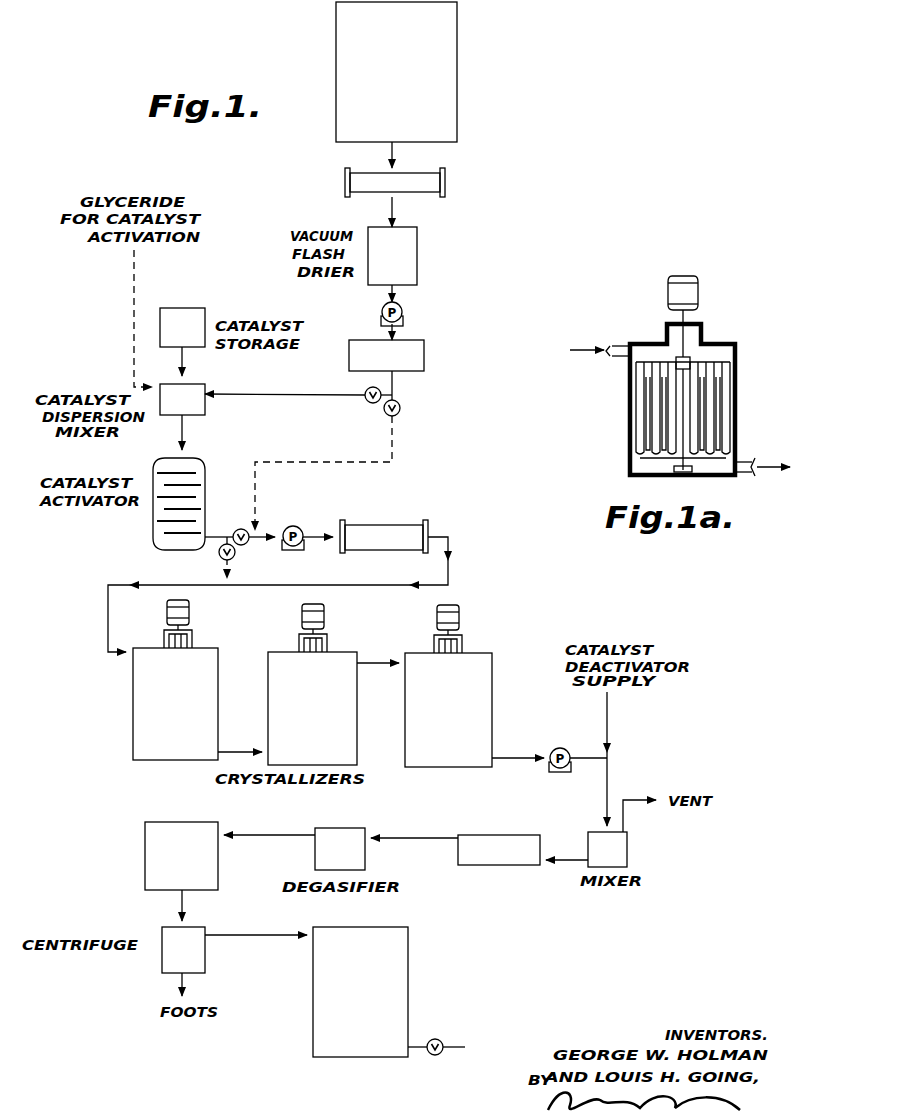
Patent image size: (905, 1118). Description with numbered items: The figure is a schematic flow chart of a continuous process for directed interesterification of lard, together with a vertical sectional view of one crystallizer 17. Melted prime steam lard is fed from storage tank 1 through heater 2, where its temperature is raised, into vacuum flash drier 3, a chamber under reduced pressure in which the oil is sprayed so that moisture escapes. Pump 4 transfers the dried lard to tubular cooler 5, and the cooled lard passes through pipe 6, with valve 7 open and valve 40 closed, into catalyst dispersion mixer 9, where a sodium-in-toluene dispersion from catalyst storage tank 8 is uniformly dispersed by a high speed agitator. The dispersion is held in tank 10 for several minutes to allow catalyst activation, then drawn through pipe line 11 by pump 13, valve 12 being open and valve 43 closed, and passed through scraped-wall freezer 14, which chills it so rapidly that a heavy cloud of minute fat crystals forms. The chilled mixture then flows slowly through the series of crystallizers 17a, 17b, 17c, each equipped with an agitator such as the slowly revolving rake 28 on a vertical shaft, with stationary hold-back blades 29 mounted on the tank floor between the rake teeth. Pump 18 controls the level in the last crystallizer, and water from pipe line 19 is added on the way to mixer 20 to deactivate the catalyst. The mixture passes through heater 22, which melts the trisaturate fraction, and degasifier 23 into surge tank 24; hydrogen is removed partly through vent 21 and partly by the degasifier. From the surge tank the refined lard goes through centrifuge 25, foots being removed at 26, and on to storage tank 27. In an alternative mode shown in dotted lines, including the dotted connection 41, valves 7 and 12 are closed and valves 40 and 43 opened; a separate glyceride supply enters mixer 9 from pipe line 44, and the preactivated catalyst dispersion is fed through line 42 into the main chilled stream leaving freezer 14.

In FIG. 1, the storage tank 1 is at (457, 94).
In FIG. 1, the heater 2 is at (445, 185).
In FIG. 1, the vacuum flash drier 3 is at (417, 258).
In FIG. 1, the pump 4 is at (402, 309).
In FIG. 1, the tubular cooler 5 is at (424, 348).
In FIG. 1, the pipe 6 is at (262, 397).
In FIG. 1, the valve 7 is at (365, 397).
In FIG. 1, the catalyst storage tank 8 is at (193, 308).
In FIG. 1, the catalyst dispersion mixer 9 is at (205, 407).
In FIG. 1, the tank 10 is at (205, 465).
In FIG. 1, the pipe line 11 is at (228, 535).
In FIG. 1, the valve 12 is at (249, 541).
In FIG. 1, the pump 13 is at (297, 526).
In FIG. 1, the scraped-wall freezer 14 is at (388, 520).
In FIG. 1A, the crystallizer 17 is at (628, 400).
In FIG. 1, the crystallizer 17a is at (175, 680).
In FIG. 1, the crystallizer 17b is at (312, 684).
In FIG. 1, the crystallizer 17c is at (448, 686).
In FIG. 1, the pump 18 is at (574, 730).
In FIG. 1, the pipe line 19 is at (608, 730).
In FIG. 1, the mixer 20 is at (627, 846).
In FIG. 1, the vent 21 is at (648, 798).
In FIG. 1, the heater 22 is at (478, 835).
In FIG. 1, the degasifier 23 is at (346, 828).
In FIG. 1, the surge tank 24 is at (172, 822).
In FIG. 1, the centrifuge 25 is at (192, 927).
In FIG. 1, the foots outlet 26 is at (182, 983).
In FIG. 1, the storage tank 27 is at (408, 950).
In FIG. 1A, the rake 28 is at (712, 378).
In FIG. 1A, the hold-back blades 29 is at (660, 464).
In FIG. 1, the valve 40 is at (386, 415).
In FIG. 1, the bypass line 41 is at (393, 452).
In FIG. 1, the line 42 is at (229, 584).
In FIG. 1, the valve 43 is at (219, 556).
In FIG. 1, the pipe line 44 is at (130, 316).